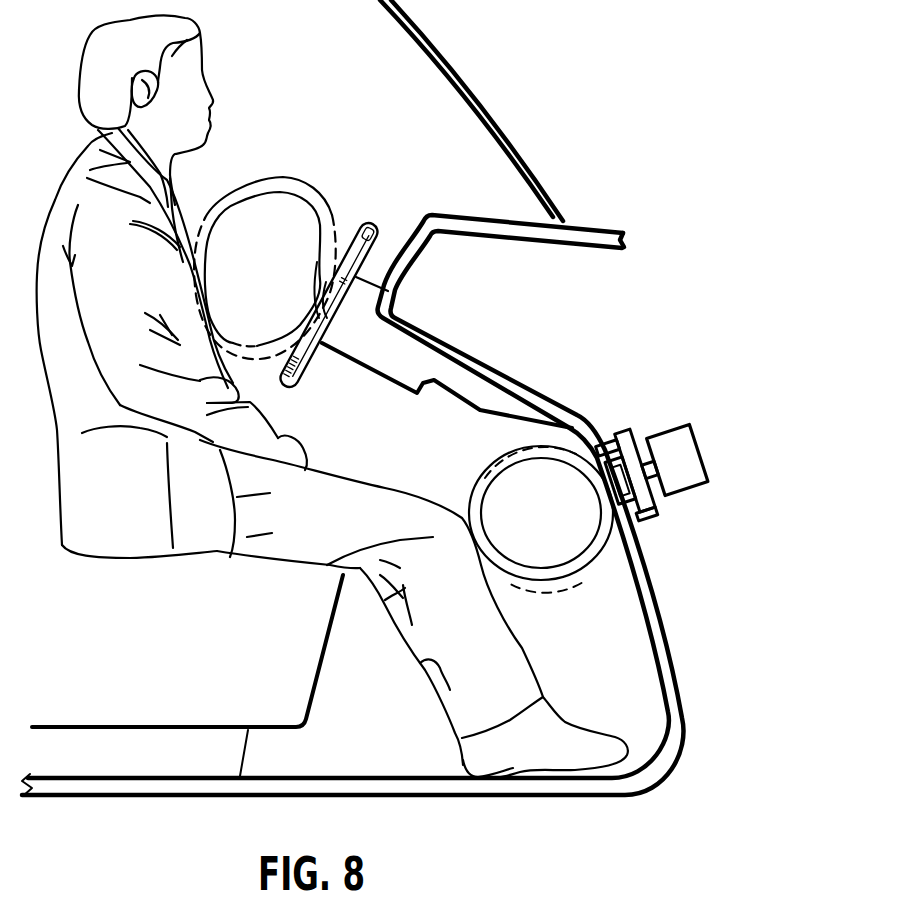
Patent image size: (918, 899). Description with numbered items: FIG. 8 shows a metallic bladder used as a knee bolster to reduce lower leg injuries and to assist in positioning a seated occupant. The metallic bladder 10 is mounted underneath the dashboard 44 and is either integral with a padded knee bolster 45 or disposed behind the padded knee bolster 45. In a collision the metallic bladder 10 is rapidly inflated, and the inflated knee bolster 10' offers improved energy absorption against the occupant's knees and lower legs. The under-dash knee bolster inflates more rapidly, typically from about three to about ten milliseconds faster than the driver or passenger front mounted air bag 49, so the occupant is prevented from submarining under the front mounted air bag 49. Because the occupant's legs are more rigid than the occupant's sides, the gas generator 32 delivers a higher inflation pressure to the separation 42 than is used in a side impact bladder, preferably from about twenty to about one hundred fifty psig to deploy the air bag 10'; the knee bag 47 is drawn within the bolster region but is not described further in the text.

The metallic bladder 10 is at (665, 420).
The inflated knee bolster 10' is at (533, 549).
The gas generator 32 is at (688, 460).
The separation 42 is at (575, 560).
The dashboard 44 is at (557, 398).
The padded knee bolster 45 is at (630, 521).
The knee air bag 47 is at (466, 518).
The front mounted air bag 49 is at (313, 193).